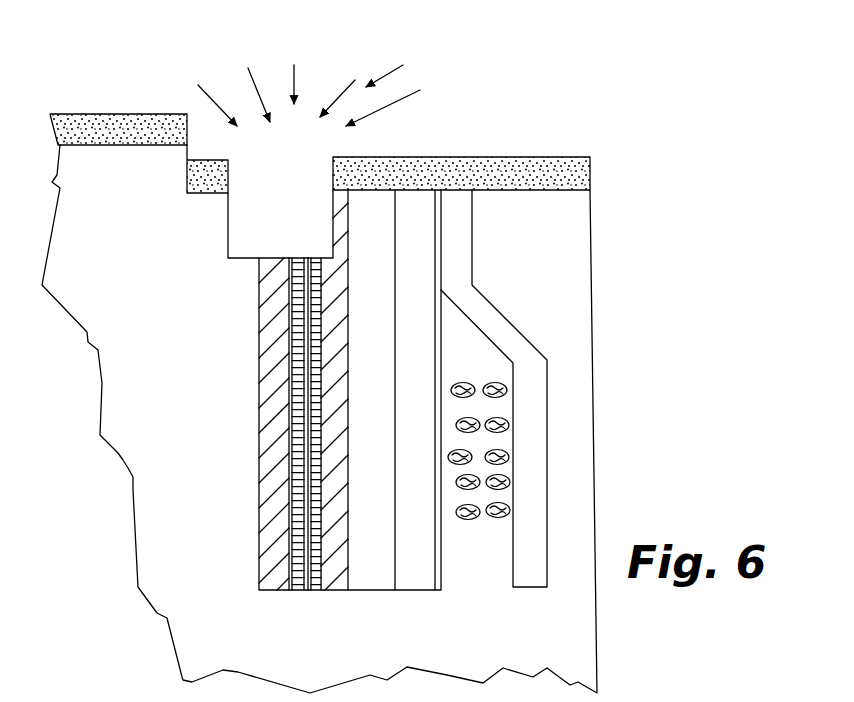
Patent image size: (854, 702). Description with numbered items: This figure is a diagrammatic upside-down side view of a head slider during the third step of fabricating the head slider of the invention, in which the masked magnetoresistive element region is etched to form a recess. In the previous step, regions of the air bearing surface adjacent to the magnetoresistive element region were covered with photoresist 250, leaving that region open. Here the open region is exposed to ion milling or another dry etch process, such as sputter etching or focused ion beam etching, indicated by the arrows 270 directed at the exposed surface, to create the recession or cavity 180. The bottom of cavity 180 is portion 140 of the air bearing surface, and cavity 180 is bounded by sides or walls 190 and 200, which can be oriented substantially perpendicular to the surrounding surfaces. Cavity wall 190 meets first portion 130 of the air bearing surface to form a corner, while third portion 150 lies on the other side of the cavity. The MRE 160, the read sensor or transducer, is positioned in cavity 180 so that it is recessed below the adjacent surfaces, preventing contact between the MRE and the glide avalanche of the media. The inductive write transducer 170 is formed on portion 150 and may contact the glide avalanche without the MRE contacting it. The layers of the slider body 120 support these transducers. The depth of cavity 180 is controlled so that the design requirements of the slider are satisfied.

The substrate 120 is at (591, 378).
The first portion of the ABS 130 is at (102, 146).
The second portion of the ABS 140 is at (239, 262).
The third portion of the ABS 150 is at (503, 192).
The MRE 160 is at (307, 608).
The inductive write transducer 170 is at (478, 567).
The cavity 180 is at (260, 203).
The cavity wall 190 is at (228, 232).
The cavity wall 200 is at (332, 228).
The photoresist 250 is at (591, 168).
The radiation 270 is at (325, 84).